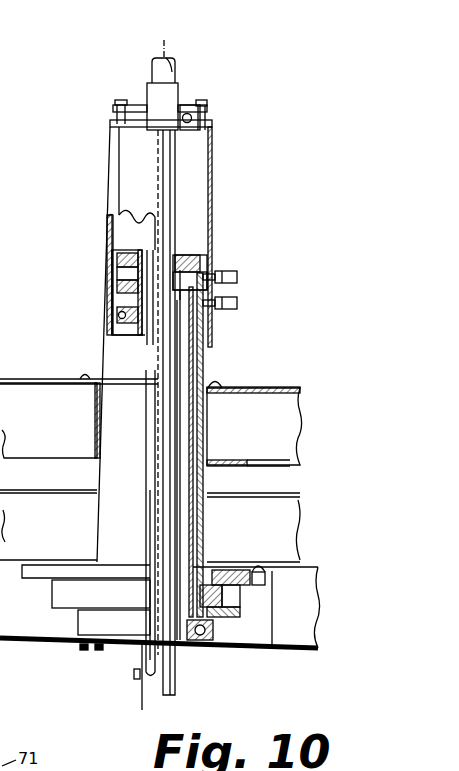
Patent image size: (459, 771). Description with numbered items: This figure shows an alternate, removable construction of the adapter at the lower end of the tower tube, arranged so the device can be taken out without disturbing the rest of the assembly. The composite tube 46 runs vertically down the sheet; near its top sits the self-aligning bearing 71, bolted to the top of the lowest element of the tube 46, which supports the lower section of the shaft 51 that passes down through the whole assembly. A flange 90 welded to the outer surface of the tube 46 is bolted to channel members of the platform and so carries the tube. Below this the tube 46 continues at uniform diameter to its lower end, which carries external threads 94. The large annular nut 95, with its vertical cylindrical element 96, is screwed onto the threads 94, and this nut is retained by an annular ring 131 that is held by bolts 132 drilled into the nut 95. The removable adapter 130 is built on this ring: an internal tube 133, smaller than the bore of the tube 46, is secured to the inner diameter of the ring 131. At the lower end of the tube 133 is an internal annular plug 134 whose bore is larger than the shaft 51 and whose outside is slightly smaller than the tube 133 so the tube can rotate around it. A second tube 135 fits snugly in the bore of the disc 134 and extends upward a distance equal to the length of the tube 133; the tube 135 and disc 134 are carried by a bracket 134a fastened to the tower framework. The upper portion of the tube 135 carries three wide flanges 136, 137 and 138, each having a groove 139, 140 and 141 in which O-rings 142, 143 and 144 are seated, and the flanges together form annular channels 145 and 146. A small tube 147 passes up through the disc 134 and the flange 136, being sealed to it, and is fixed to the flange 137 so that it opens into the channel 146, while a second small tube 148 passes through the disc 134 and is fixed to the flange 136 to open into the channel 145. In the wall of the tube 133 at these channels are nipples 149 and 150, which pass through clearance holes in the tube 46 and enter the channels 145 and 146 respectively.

The composite tube 46 is at (254, 411).
The shaft 51 is at (133, 677).
The self-aligning bearing 71 is at (183, 107).
The flange 90 is at (75, 388).
The external threads 94 is at (238, 609).
The annular nut 95 is at (215, 622).
The vertical cylindrical element 96 is at (241, 597).
The removable adapter 130 is at (206, 349).
The annular ring 131 is at (222, 641).
The bolts 132 is at (72, 647).
The internal tube 133 is at (197, 475).
The internal annular plug 134 is at (183, 648).
The bracket 134a is at (97, 648).
The second tube 135 is at (170, 437).
The flange 136 is at (205, 335).
The flange 137 is at (204, 268).
The flange 138 is at (180, 256).
The groove 139 is at (107, 327).
The groove 140 is at (128, 300).
The groove 141 is at (108, 237).
The O-ring 142 is at (118, 317).
The O-ring 143 is at (120, 280).
The O-ring 144 is at (118, 260).
The annular channel 145 is at (147, 335).
The annular channel 146 is at (192, 262).
The small tube 147 is at (176, 694).
The second small tube 148 is at (143, 665).
The nipple 149 is at (237, 303).
The nipple 150 is at (237, 274).